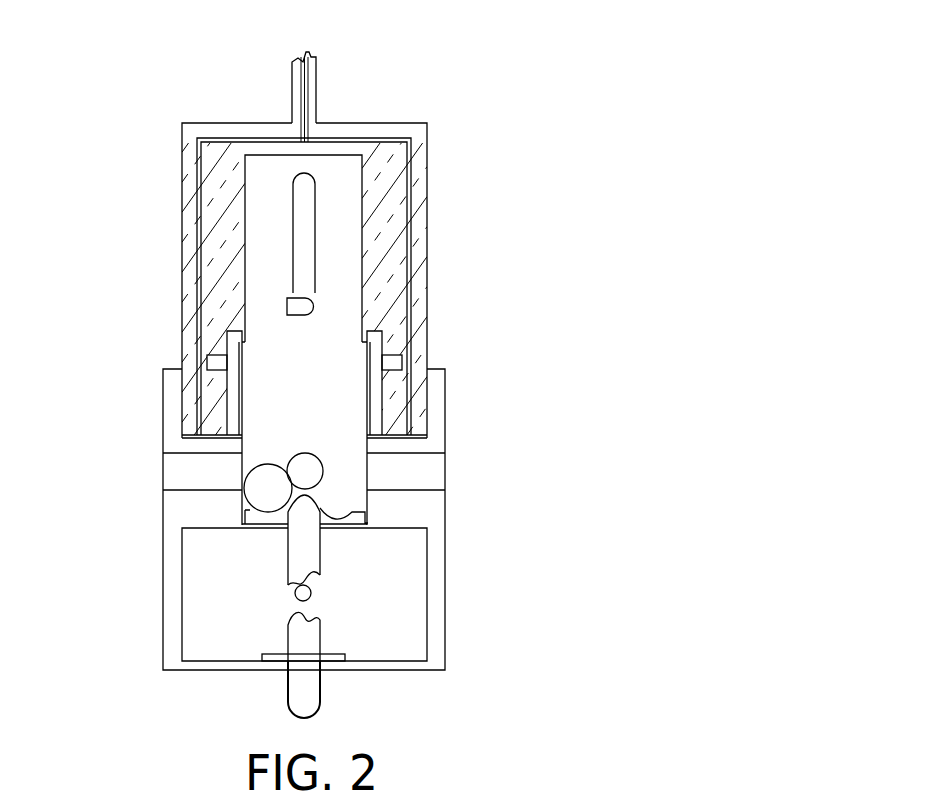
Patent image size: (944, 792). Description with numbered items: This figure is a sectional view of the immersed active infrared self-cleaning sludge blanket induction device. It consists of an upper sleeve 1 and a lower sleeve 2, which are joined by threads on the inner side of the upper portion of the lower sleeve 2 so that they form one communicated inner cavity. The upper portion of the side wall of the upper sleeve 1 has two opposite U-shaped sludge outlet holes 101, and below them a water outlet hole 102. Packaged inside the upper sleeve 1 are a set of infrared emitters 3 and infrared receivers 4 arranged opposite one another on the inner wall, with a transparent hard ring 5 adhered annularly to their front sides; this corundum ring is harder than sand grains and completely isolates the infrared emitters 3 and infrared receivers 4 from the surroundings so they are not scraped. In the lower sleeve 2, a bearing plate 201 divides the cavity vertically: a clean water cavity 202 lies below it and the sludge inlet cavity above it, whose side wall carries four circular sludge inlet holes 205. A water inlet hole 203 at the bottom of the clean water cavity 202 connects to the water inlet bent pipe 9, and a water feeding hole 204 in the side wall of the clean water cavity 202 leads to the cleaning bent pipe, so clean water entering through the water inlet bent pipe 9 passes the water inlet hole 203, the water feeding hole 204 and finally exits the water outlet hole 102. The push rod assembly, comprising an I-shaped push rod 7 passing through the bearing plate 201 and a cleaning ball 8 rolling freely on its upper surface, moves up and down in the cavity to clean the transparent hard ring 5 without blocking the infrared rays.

The upper sleeve 1 is at (427, 237).
The U-shaped sludge outlet hole 101 is at (315, 200).
The water outlet hole 102 is at (287, 298).
The lower sleeve 2 is at (445, 607).
The bearing plate 201 is at (333, 527).
The clean water cavity 202 is at (355, 558).
The water inlet hole 203 is at (287, 663).
The water feeding hole 204 is at (310, 593).
The circular sludge inlet hole 205 is at (445, 468).
The infrared emitter 3 is at (207, 360).
The infrared receiver 4 is at (378, 367).
The transparent hard ring 5 is at (388, 404).
The I-shaped push rod 7 is at (310, 637).
The cleaning ball 8 is at (268, 489).
The water inlet bent pipe 9 is at (325, 685).